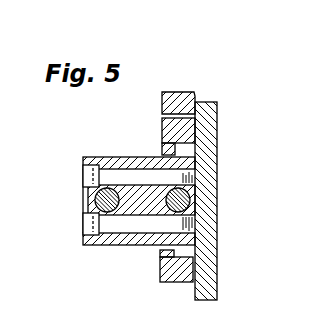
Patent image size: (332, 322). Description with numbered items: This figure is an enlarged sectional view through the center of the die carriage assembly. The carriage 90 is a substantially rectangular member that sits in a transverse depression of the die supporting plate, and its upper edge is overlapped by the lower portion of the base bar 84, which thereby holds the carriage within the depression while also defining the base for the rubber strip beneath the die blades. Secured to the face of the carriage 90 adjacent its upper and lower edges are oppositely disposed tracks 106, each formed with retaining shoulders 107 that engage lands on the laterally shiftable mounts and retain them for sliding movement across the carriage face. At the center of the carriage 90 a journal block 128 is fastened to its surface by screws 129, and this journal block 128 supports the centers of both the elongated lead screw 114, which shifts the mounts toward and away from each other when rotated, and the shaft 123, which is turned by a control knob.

The base bar 84 is at (188, 92).
The carriage 90 is at (218, 112).
The tracks 106 is at (162, 128).
The retaining shoulders 107 is at (178, 146).
The journal block 128 is at (103, 157).
The screws 129 is at (87, 174).
The shaft 123 is at (95, 201).
The lead screw 114 is at (188, 202).